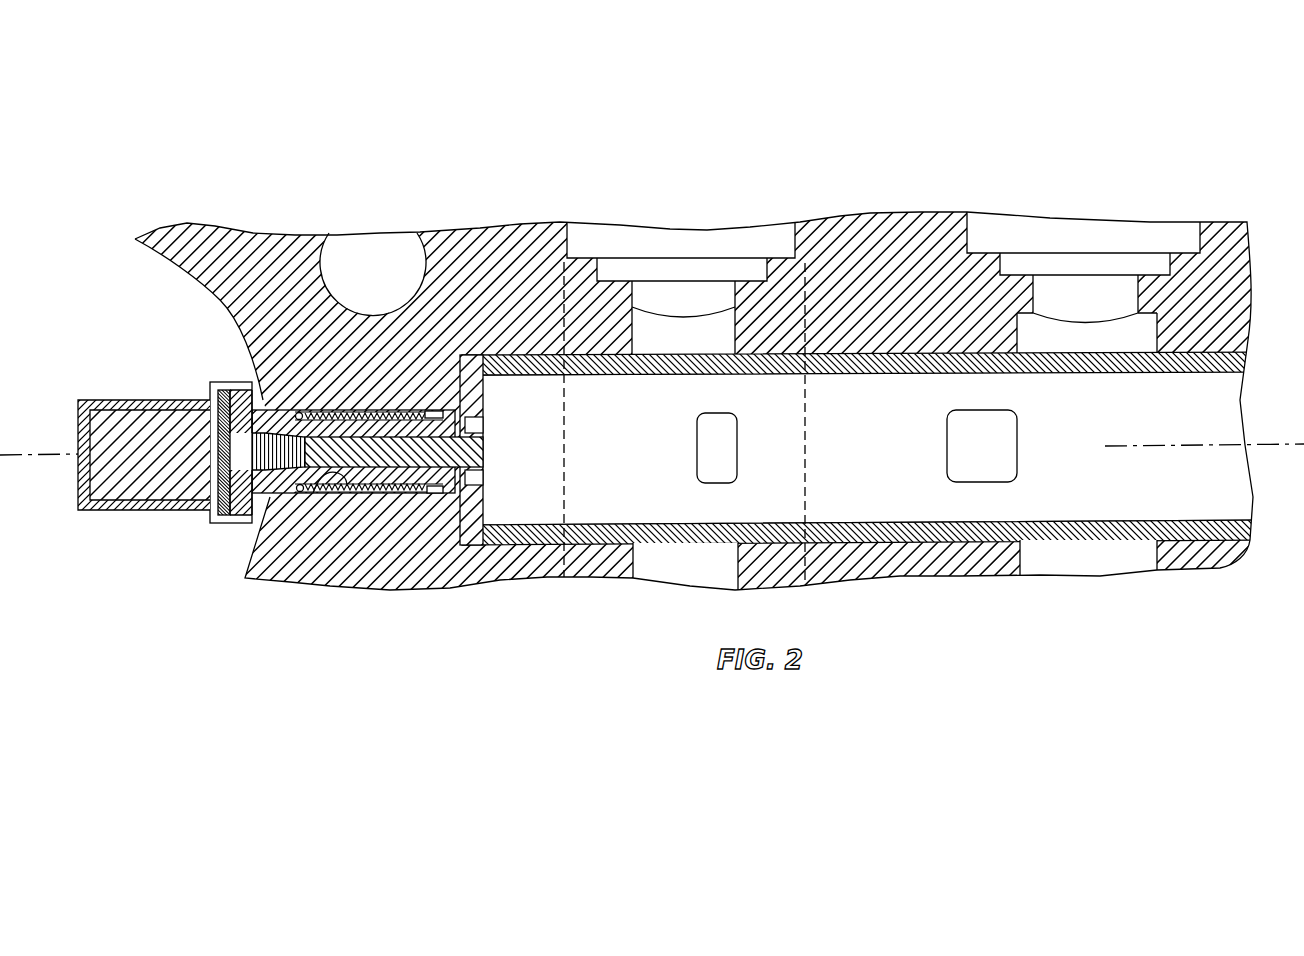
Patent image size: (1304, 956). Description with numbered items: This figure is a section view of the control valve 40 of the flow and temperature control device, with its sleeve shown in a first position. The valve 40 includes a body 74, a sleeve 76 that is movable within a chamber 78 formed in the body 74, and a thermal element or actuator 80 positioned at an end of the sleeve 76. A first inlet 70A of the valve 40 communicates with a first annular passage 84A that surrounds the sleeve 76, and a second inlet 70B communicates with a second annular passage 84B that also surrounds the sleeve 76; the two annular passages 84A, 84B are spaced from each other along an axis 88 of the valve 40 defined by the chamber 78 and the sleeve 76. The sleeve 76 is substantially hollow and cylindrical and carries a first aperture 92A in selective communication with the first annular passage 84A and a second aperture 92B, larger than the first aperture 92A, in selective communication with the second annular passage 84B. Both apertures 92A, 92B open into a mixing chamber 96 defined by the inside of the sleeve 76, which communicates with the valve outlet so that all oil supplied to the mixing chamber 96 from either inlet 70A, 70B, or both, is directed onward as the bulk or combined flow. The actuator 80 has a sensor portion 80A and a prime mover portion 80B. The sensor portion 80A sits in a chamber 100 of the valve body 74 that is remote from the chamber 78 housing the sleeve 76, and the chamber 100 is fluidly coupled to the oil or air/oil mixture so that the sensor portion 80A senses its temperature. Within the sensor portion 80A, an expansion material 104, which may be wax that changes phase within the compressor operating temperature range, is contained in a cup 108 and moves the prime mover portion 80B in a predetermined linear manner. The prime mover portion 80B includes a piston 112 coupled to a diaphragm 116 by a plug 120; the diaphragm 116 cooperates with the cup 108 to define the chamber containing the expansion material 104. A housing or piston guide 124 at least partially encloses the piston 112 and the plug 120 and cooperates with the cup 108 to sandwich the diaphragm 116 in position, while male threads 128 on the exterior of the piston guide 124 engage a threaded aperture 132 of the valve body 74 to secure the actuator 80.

The control valve 40 is at (346, 98).
The body 74 is at (472, 243).
The chamber 78 is at (514, 372).
The first inlet 70A is at (568, 243).
The second inlet 70B is at (970, 235).
The first annular passage 84A is at (632, 330).
The second annular passage 84B is at (1040, 333).
The sleeve 76 is at (890, 367).
The mixing chamber 96 is at (685, 374).
The axis 88 is at (1213, 443).
The first aperture 92A is at (697, 455).
The second aperture 92B is at (947, 452).
The actuator 80 is at (107, 352).
The sensor portion 80A is at (117, 546).
The prime mover portion 80B is at (370, 388).
The chamber 100 is at (177, 266).
The cup 108 is at (93, 400).
The expansion material 104 is at (153, 425).
The plug 120 is at (225, 453).
The diaphragm 116 is at (213, 487).
The male threads 128 is at (322, 408).
The threaded aperture 132 is at (318, 488).
The piston guide 124 is at (358, 488).
The piston 112 is at (413, 450).